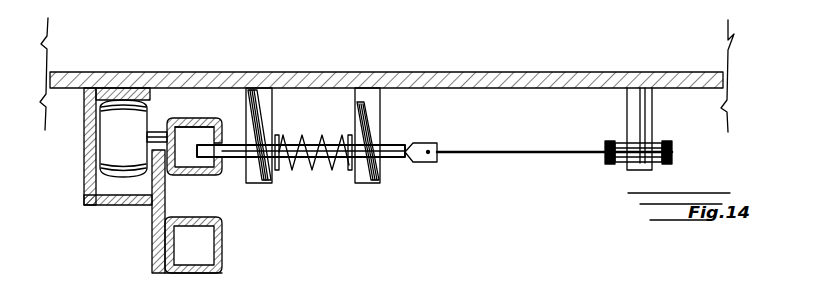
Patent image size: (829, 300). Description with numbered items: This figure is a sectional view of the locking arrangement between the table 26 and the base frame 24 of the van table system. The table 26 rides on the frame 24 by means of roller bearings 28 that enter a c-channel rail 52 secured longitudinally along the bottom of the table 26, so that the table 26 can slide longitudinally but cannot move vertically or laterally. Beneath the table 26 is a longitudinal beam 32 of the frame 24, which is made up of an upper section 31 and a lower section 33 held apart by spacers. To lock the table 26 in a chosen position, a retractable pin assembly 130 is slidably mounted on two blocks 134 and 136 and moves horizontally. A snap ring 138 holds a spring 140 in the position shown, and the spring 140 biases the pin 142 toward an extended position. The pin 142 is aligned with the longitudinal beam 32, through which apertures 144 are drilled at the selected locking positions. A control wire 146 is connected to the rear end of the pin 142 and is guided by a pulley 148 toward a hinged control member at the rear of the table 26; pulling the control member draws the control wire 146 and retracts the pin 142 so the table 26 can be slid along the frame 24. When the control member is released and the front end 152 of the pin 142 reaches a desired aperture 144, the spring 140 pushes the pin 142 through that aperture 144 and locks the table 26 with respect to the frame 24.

The frame 24 is at (228, 255).
The table 26 is at (483, 66).
The roller bearings 28 is at (100, 175).
The upper section 31 is at (203, 119).
The longitudinal beam 32 is at (187, 107).
The lower section 33 is at (222, 274).
The c-channel rail 52 is at (84, 196).
The retractable pin assembly 130 is at (308, 110).
The block 134 is at (366, 184).
The block 136 is at (268, 184).
The snap ring 138 is at (278, 172).
The spring 140 is at (351, 172).
The pin 142 is at (412, 143).
The aperture 144 is at (228, 144).
The control wire 146 is at (495, 150).
The pulley 148 is at (616, 166).
The front end of pin 152 is at (189, 126).